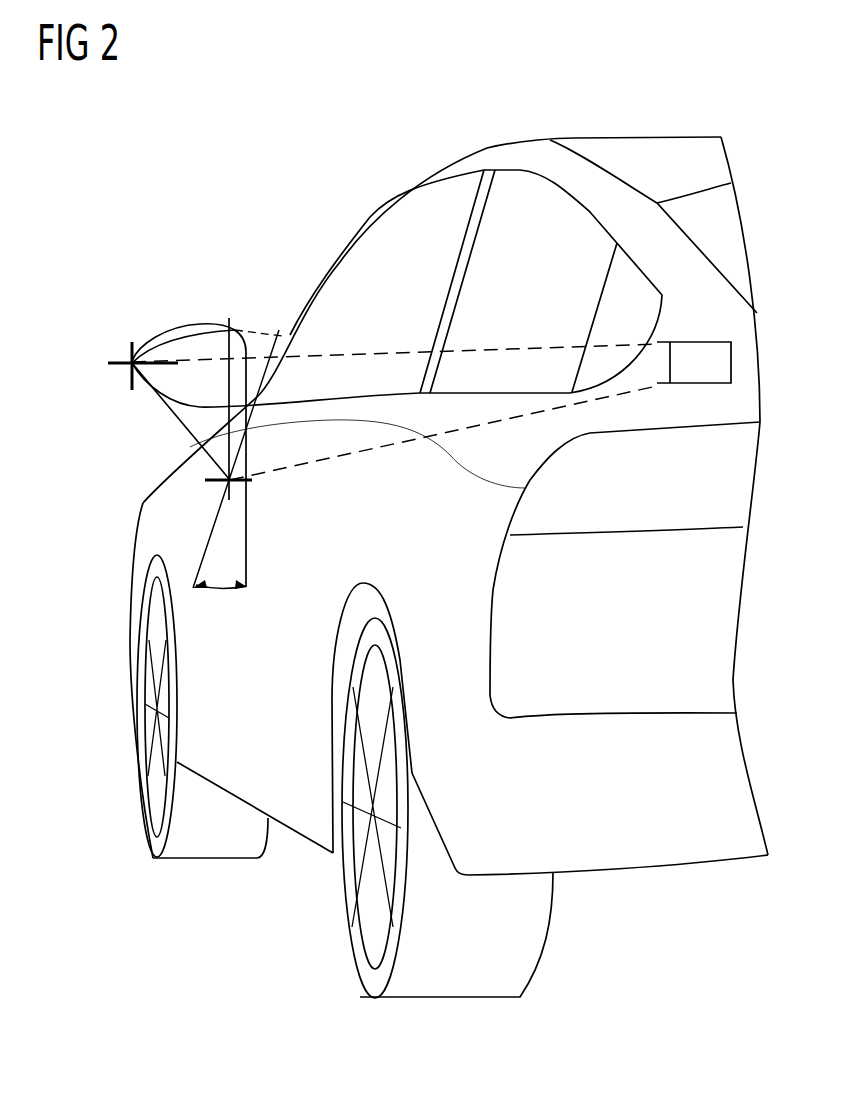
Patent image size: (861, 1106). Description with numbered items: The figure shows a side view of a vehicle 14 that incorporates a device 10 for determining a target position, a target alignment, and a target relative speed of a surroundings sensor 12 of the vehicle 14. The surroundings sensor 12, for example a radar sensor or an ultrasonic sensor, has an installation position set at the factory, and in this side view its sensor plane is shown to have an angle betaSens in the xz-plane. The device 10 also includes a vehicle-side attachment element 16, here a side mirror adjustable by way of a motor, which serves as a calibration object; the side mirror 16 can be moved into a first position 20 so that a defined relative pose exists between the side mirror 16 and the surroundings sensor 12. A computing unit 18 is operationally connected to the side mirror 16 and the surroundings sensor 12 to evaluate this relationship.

The device 10 is at (433, 567).
The surroundings sensor 12 is at (230, 480).
The vehicle 14 is at (247, 762).
The vehicle-side attachment element 16 is at (158, 334).
The computing unit 18 is at (707, 365).
The first position 20 is at (126, 369).